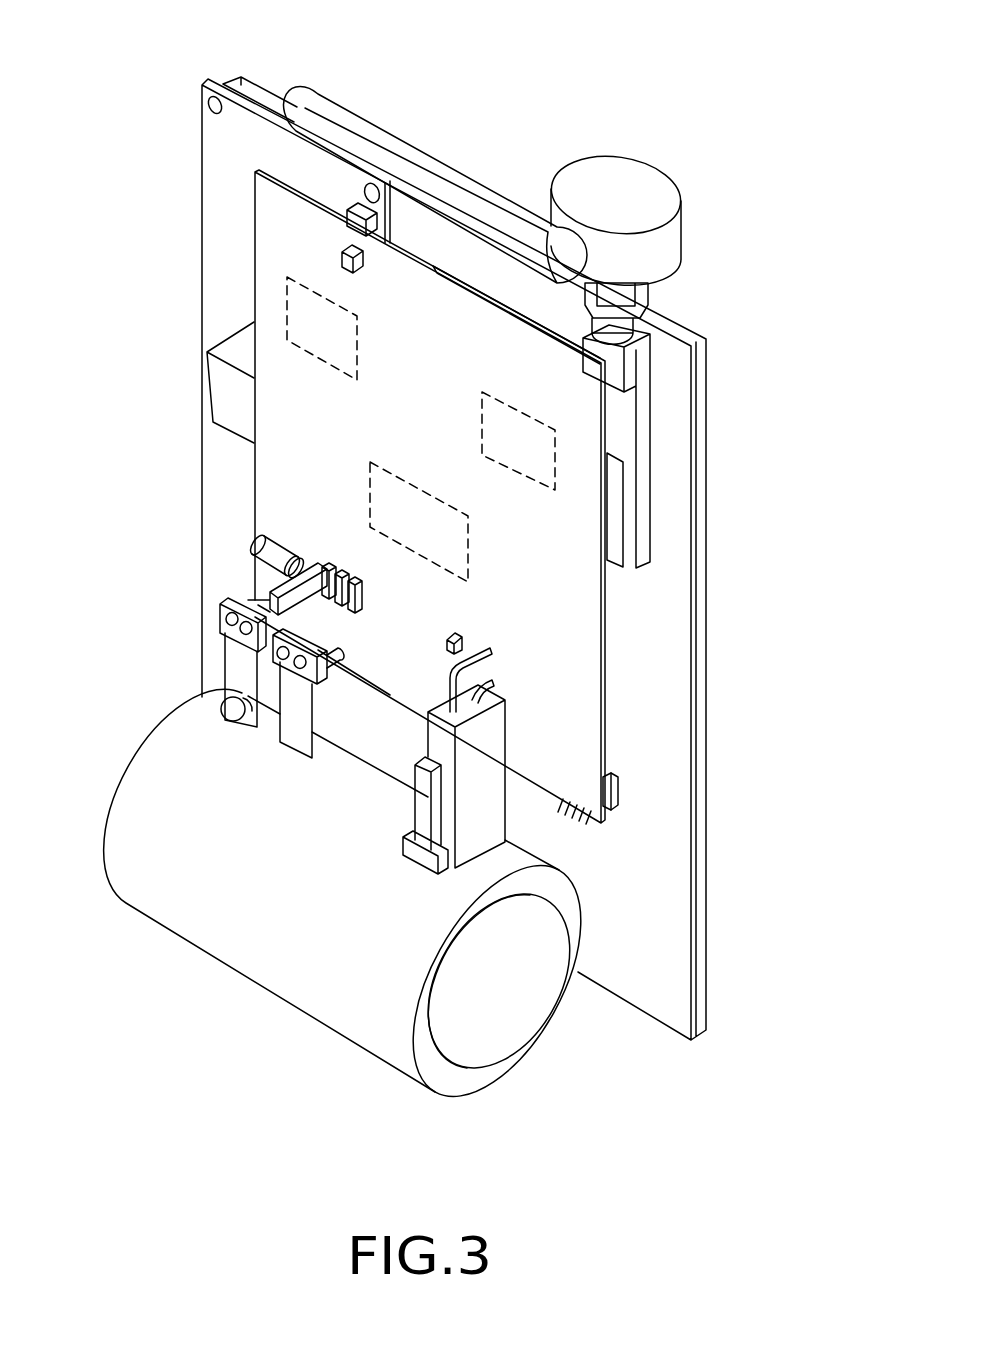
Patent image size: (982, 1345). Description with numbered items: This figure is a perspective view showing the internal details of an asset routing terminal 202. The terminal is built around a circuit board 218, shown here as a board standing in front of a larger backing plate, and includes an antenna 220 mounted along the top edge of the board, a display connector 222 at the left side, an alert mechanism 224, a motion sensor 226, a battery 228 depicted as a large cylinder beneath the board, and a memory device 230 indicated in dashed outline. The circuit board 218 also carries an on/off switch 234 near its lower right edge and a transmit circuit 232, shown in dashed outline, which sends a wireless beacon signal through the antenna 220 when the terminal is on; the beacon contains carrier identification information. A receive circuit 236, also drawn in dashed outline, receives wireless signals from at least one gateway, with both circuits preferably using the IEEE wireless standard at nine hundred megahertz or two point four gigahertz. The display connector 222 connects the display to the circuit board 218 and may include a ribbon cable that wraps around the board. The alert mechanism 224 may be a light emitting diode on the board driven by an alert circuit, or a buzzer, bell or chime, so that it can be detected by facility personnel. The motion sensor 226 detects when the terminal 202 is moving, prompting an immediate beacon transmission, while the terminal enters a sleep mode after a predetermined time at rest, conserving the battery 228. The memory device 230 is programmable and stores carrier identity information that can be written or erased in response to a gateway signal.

The asset routing terminal 202 is at (733, 287).
The circuit board 218 is at (603, 648).
The antenna 220 is at (352, 112).
The display connector 222 is at (233, 433).
The alert mechanism 224 is at (341, 256).
The motion sensor 226 is at (266, 557).
The battery 228 is at (300, 990).
The memory device 230 is at (302, 318).
The transmit circuit 232 is at (558, 430).
The on/off switch 234 is at (618, 790).
The receive circuit 236 is at (375, 503).